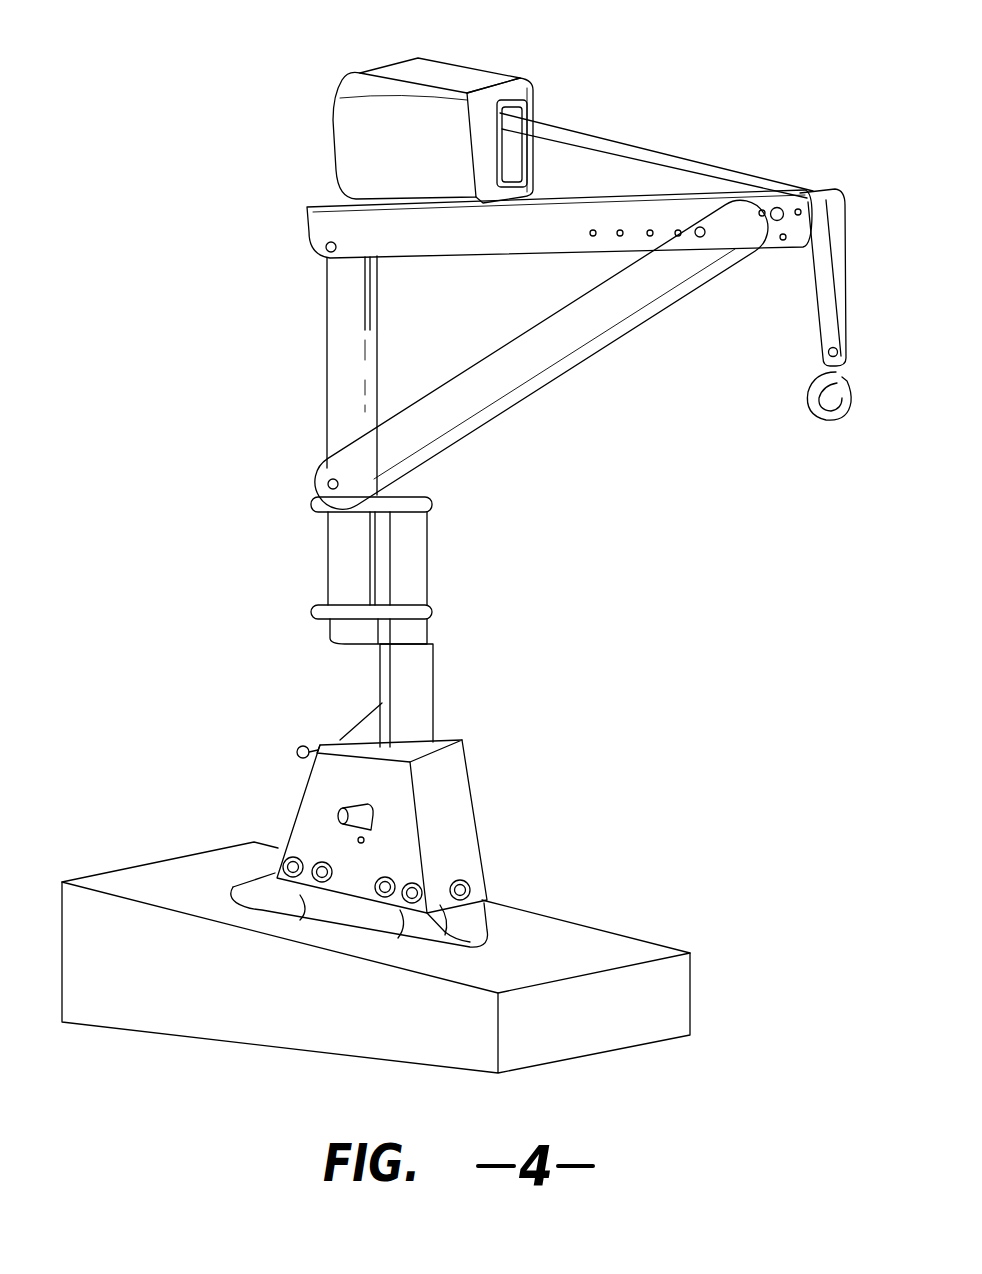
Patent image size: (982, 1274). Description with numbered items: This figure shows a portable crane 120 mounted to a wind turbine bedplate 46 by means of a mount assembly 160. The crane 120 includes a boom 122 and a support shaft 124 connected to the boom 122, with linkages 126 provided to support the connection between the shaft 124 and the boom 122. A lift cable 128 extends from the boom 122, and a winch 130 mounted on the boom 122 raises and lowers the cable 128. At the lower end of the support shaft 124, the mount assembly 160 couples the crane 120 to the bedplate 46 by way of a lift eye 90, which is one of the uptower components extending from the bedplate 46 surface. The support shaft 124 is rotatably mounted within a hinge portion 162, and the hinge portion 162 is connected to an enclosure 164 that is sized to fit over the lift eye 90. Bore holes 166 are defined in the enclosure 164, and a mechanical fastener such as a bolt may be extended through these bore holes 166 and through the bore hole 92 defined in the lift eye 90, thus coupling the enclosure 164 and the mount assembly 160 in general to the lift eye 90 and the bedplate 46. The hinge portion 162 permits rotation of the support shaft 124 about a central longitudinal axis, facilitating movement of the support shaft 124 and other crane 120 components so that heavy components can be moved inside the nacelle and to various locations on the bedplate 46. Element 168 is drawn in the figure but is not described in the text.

The portable crane 120 is at (268, 110).
The boom 122 is at (488, 233).
The support shaft 124 is at (346, 337).
The linkages 126 is at (603, 320).
The lift cable 128 is at (807, 280).
The winch 130 is at (440, 70).
The mount assembly 160 is at (508, 692).
The hinge portion 162 is at (442, 560).
The enclosure 164 is at (460, 818).
The bore holes 166 is at (361, 856).
The fitting 168 is at (343, 817).
The bore hole 92 is at (347, 838).
The lift eye 90 is at (443, 930).
The bedplate 46 is at (176, 878).